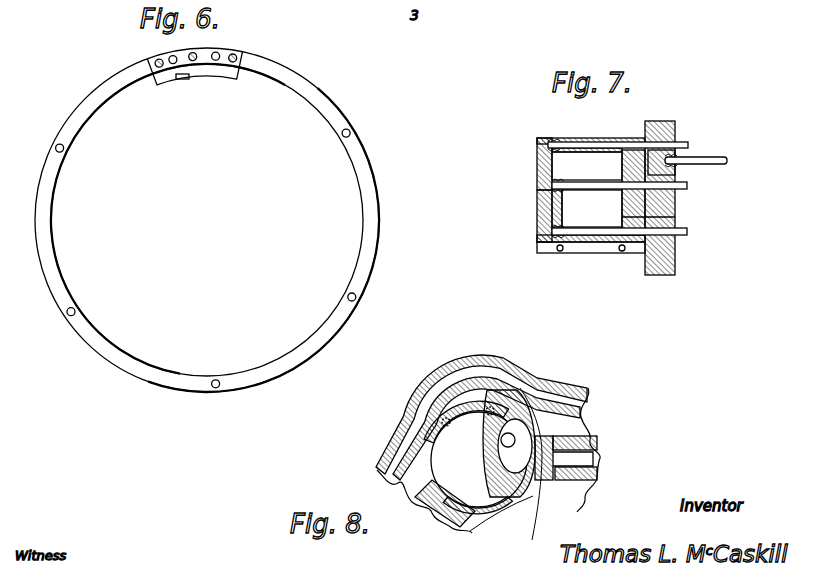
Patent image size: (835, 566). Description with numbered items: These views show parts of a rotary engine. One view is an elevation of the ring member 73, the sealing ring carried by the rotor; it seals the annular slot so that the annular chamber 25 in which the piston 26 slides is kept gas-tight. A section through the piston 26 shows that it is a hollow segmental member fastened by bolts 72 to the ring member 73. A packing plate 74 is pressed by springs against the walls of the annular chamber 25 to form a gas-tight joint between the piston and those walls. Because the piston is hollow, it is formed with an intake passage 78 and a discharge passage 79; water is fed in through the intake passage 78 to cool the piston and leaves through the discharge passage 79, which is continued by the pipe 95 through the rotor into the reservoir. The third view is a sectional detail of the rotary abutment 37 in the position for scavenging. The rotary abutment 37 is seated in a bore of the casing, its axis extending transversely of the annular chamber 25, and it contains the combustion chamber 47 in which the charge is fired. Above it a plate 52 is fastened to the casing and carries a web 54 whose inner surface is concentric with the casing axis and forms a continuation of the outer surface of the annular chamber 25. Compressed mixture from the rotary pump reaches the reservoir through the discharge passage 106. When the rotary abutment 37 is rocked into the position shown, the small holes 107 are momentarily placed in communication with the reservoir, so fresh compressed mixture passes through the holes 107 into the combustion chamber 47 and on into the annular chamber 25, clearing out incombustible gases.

In FIG. 6, the ring member 73 is at (138, 364).
In FIG. 7, the ring member 73 is at (660, 253).
In FIG. 6, the piston 26 is at (222, 70).
In FIG. 7, the piston 26 is at (537, 165).
In FIG. 6, the bolts 72 is at (156, 60).
In FIG. 7, the bolts 72 is at (678, 143).
In FIG. 6, the intake passage 78 is at (173, 64).
In FIG. 7, the intake passage 78 is at (676, 217).
In FIG. 6, the discharge passage 79 is at (219, 54).
In FIG. 7, the discharge passage 79 is at (658, 160).
In FIG. 6, the packing plate 74 is at (187, 80).
In FIG. 7, the packing plate 74 is at (537, 207).
In FIG. 7, the pipe 95 is at (718, 157).
In FIG. 8, the annular chamber 25 is at (567, 423).
In FIG. 8, the plate 52 is at (443, 392).
In FIG. 8, the web 54 is at (470, 410).
In FIG. 8, the rotary abutment 37 is at (517, 393).
In FIG. 8, the combustion chamber 47 is at (516, 458).
In FIG. 8, the small holes 107 is at (537, 497).
In FIG. 8, the discharge passage 106 is at (528, 497).